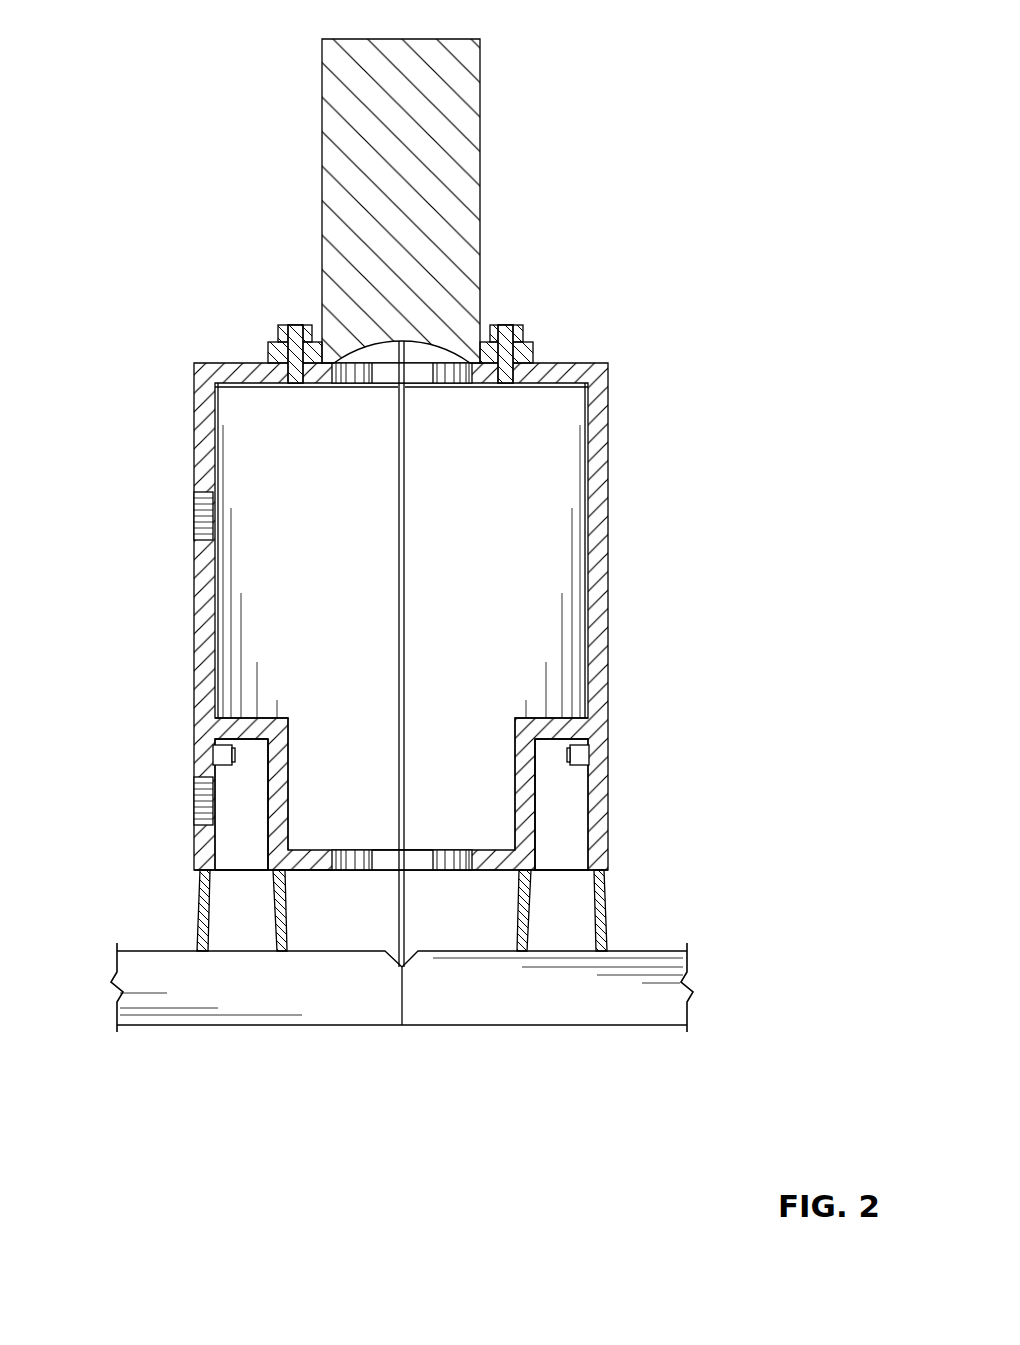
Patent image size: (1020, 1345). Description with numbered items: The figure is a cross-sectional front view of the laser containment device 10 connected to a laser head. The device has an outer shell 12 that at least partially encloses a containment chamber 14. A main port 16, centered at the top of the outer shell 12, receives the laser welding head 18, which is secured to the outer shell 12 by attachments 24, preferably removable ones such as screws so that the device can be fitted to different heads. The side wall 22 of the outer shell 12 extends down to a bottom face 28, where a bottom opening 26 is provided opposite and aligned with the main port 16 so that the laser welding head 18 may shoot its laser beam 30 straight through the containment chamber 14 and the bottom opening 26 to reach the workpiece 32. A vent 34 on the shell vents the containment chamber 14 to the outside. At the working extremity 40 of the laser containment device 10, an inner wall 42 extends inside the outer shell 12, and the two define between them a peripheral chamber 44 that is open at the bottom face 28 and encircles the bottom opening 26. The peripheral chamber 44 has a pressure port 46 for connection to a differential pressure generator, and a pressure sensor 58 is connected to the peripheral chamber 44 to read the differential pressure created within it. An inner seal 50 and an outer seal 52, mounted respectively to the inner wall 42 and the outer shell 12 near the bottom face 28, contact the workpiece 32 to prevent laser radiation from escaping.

The laser containment device 10 is at (687, 488).
The outer shell 12 is at (602, 400).
The containment chamber 14 is at (520, 463).
The main port 16 is at (457, 373).
The laser welding head 18 is at (466, 70).
The side wall 22 is at (607, 663).
The attachments 24 is at (292, 325).
The bottom opening 26 is at (428, 870).
The bottom face 28 is at (307, 872).
The laser beam 30 is at (398, 497).
The workpiece 32 is at (641, 1017).
The port 34 is at (202, 517).
The working extremity 40 is at (652, 910).
The inner wall 42 is at (290, 748).
The peripheral chamber 44 is at (242, 825).
The pressure port 46 is at (204, 800).
The inner seal 50 is at (525, 918).
The outer seal 52 is at (603, 885).
The pressure sensor 58 is at (213, 753).